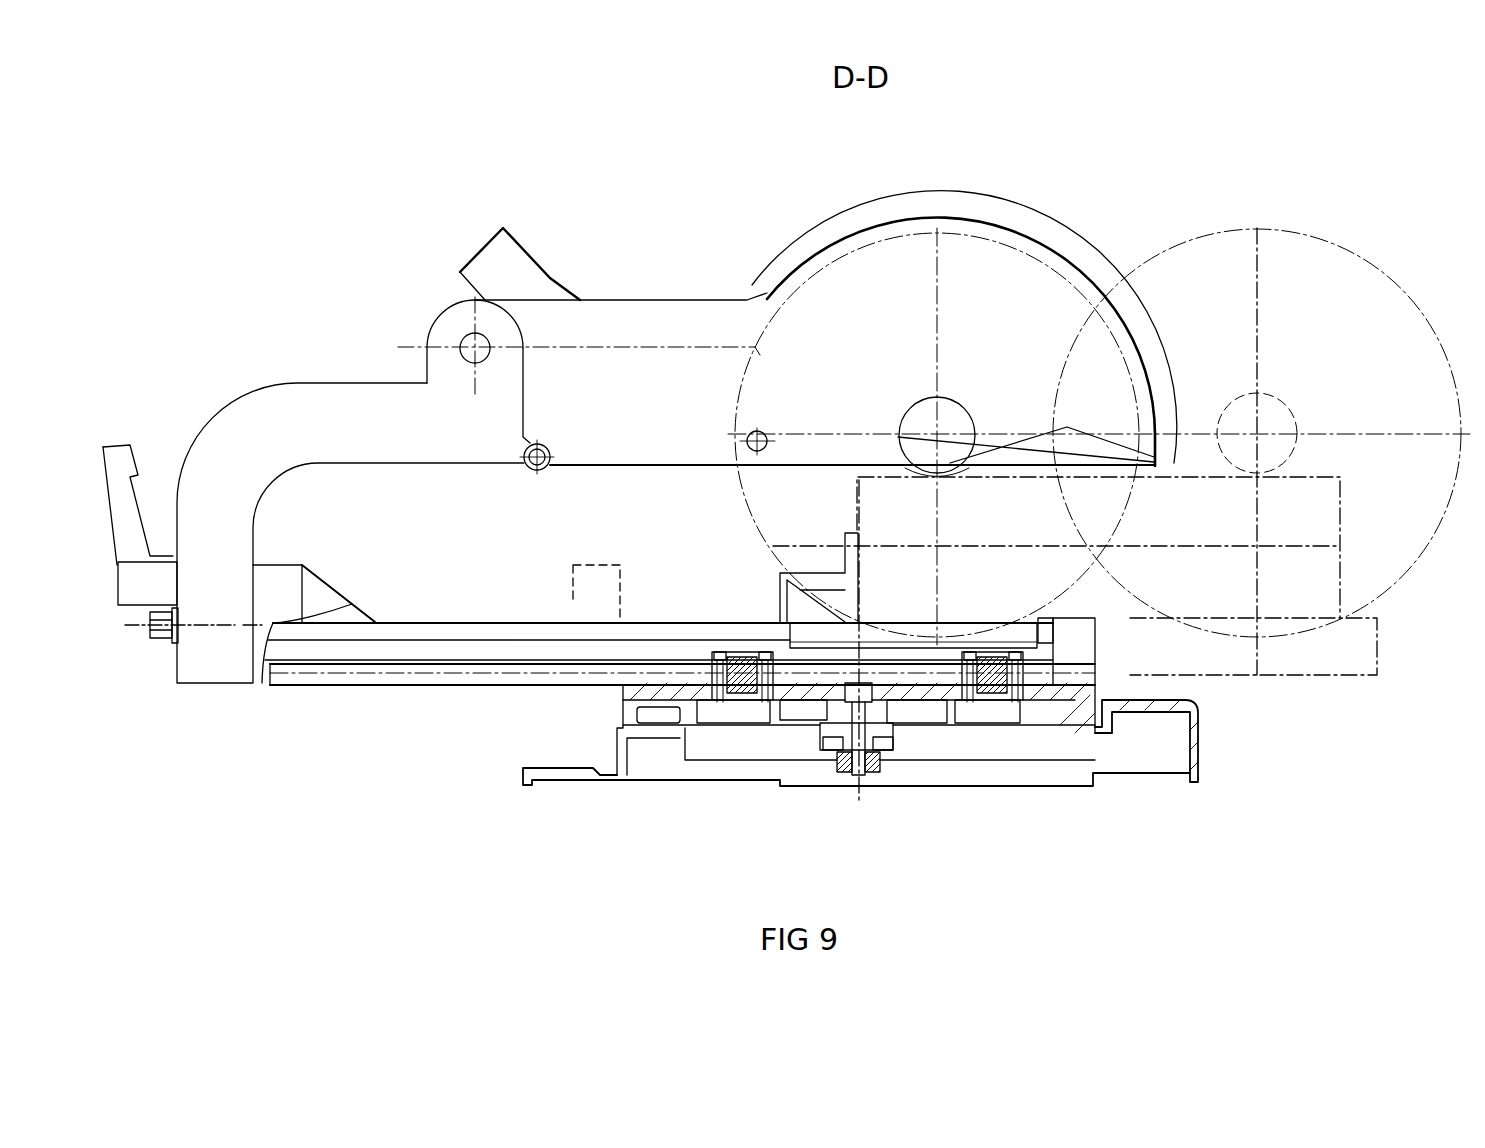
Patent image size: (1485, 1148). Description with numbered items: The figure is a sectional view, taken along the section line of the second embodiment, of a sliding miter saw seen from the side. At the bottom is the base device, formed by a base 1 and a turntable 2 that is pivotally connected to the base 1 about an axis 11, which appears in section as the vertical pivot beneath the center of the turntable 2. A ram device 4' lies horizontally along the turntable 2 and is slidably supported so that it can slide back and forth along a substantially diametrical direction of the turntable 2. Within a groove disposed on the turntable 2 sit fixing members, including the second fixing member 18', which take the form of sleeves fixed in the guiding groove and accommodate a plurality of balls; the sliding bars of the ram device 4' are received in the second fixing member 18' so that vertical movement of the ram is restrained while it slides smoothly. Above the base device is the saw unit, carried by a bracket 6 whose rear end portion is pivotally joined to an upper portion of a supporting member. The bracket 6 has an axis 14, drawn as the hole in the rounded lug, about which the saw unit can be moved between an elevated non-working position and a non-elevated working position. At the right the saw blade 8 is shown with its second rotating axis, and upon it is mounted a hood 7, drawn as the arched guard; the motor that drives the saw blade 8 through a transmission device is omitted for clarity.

The base 1 is at (1200, 737).
The turntable 2 is at (1095, 735).
The ram device 4' is at (678, 720).
The bracket 6 is at (648, 390).
The hood 7 is at (870, 210).
The saw blade 8 is at (787, 397).
The axis 11 is at (843, 750).
The axis 14 is at (462, 335).
The second fixing member 18' is at (820, 750).